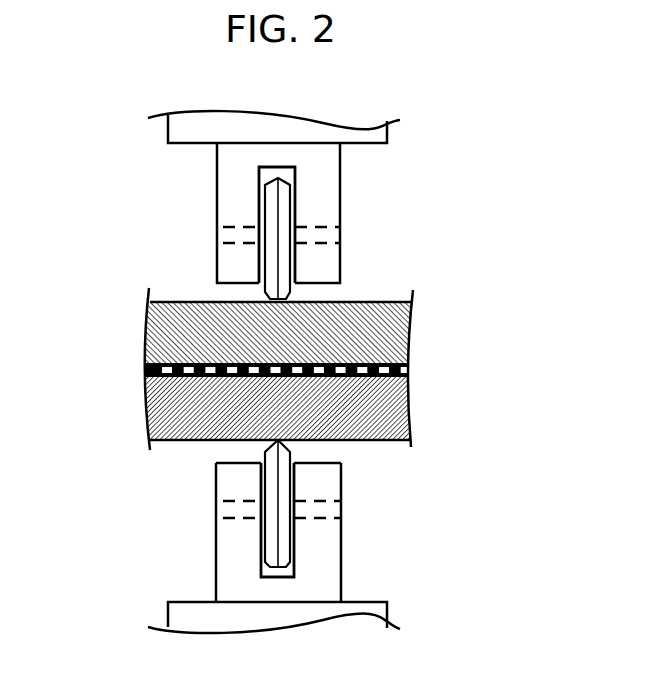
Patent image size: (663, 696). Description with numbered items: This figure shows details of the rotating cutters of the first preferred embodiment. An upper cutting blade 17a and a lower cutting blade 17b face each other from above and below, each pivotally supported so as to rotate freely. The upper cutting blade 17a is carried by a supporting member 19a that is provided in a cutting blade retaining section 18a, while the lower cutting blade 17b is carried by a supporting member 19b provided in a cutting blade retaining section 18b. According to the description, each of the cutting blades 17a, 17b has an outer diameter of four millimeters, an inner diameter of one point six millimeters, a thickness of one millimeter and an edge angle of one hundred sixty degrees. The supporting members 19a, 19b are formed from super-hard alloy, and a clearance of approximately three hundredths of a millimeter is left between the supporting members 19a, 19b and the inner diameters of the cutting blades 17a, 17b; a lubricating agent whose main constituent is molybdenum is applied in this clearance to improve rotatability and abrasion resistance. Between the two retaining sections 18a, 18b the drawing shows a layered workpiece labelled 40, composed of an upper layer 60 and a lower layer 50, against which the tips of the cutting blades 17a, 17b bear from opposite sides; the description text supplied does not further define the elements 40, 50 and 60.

The cutting blade 17a is at (283, 270).
The cutting blade 17b is at (283, 473).
The cutting blade retaining section 18a is at (327, 194).
The cutting blade retaining section 18b is at (320, 546).
The supporting member 19a is at (222, 233).
The supporting member 19b is at (228, 509).
The laminate 40 is at (368, 369).
The lower layer 50 is at (336, 408).
The upper layer 60 is at (398, 336).